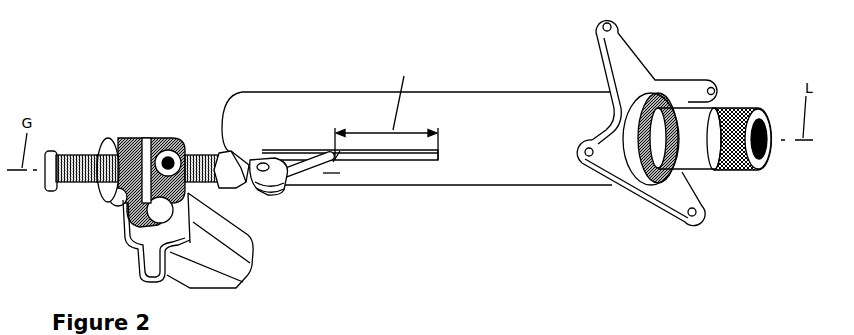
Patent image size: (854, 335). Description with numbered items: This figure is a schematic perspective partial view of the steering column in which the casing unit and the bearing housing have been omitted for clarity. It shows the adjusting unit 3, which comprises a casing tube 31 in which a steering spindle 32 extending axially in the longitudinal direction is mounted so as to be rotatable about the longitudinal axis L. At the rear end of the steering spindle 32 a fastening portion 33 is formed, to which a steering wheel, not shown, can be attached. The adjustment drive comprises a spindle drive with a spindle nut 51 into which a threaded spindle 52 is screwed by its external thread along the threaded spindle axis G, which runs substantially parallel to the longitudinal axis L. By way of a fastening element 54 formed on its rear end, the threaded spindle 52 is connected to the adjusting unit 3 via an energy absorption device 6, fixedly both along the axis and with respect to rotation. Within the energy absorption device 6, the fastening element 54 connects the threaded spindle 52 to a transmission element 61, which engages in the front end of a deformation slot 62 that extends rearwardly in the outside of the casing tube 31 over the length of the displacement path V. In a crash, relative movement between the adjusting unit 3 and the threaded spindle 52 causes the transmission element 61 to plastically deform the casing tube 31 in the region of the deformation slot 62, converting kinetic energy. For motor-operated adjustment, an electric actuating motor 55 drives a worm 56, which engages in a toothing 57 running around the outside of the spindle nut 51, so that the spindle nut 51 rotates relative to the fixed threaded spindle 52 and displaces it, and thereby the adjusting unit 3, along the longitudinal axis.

The adjusting unit 3 is at (458, 78).
The casing tube 31 is at (545, 108).
The steering spindle 32 is at (700, 127).
The fastening portion 33 is at (743, 112).
The energy absorption device 6 is at (336, 198).
The transmission element 61 is at (297, 163).
The deformation slot 62 is at (387, 157).
The spindle nut 51 is at (107, 180).
The threaded spindle 52 is at (80, 150).
The fastening element 54 is at (250, 165).
The actuating motor 55 is at (225, 258).
The worm 56 is at (137, 223).
The toothing 57 is at (135, 138).